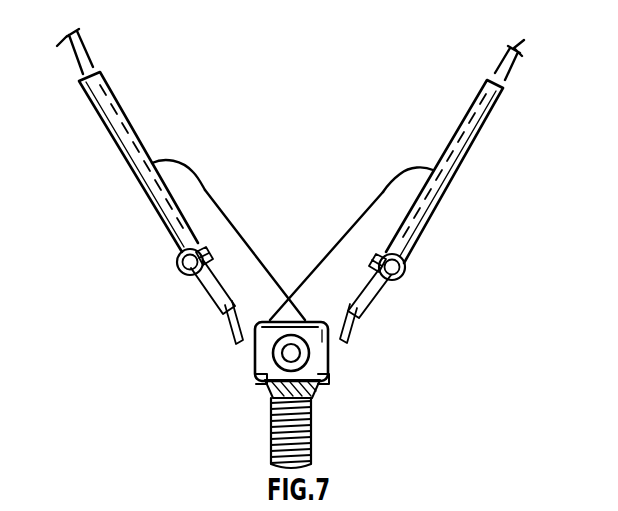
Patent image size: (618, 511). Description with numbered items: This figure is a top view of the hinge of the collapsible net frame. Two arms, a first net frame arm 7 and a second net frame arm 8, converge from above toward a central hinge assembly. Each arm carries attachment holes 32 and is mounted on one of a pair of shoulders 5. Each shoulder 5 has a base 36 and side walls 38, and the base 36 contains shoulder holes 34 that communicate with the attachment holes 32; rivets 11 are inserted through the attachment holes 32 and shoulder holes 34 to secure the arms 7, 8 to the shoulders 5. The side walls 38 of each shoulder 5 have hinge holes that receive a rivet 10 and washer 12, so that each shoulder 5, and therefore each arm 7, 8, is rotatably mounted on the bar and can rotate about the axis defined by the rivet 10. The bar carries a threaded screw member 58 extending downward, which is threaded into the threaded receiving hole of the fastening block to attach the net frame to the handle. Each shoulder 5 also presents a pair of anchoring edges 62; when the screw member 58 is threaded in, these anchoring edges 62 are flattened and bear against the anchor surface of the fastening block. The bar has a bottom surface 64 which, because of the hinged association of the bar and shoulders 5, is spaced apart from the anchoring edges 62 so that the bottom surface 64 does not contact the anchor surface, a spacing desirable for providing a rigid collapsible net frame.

The shoulder 5 is at (217, 212).
The first net frame arm 7 is at (505, 66).
The second net frame arm 8 is at (86, 63).
The rivet 10 is at (300, 357).
The rivet 11 is at (187, 263).
The washer 12 is at (344, 343).
The attachment hole 32 is at (178, 260).
The shoulder hole 34 is at (201, 283).
The base 36 is at (141, 179).
The side wall 38 is at (178, 177).
The threaded screw member 58 is at (281, 442).
The anchoring edge 62 is at (272, 404).
The bottom surface 64 is at (268, 389).